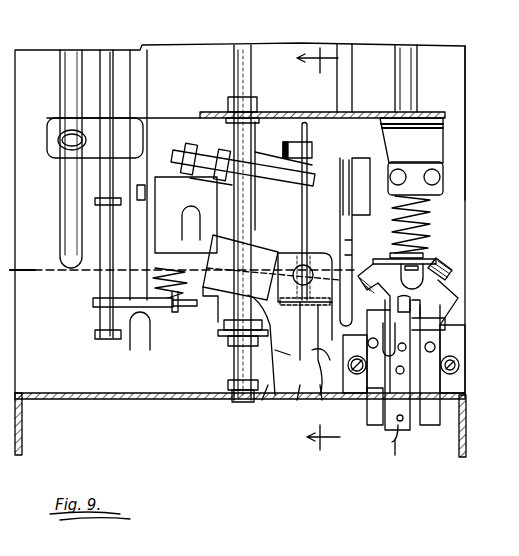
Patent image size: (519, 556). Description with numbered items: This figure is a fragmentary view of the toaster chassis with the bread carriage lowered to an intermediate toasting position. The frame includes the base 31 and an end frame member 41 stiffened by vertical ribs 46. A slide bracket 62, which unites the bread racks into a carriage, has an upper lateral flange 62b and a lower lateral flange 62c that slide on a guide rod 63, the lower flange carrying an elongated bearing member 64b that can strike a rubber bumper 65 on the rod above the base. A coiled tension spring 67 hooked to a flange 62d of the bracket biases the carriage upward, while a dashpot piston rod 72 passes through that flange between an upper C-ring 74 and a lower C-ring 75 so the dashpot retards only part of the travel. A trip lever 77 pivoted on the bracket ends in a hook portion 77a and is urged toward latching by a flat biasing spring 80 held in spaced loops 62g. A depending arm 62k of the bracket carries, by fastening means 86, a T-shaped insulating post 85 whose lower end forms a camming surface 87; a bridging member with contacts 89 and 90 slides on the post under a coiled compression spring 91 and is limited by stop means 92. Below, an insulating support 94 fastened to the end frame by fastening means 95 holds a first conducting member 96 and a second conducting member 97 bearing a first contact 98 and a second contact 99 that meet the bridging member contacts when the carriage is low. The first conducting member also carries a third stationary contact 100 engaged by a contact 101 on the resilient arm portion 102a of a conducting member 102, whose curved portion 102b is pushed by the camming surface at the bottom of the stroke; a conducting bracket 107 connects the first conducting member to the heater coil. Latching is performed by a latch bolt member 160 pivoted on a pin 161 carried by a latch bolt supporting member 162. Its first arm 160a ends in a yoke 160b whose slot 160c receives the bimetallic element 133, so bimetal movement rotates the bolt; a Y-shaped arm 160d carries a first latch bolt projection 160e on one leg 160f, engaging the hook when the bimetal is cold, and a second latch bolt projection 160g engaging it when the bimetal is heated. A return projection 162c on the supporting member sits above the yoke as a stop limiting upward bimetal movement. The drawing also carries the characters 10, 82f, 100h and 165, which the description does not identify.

The section line 10 is at (303, 42).
The base 31 is at (22, 418).
The end frame member 41 is at (447, 67).
The vertical ribs 46 is at (67, 70).
The slide bracket 62 is at (157, 118).
The upper lateral flange 62b is at (289, 111).
The lower lateral flange 62c is at (225, 325).
The flange 62d is at (122, 342).
The spaced loops 62g is at (225, 150).
The depending arm 62k is at (430, 145).
The guide rod 63 is at (238, 60).
The elongated bearing member 64b is at (230, 340).
The rubber bumper 65 is at (215, 385).
The coiled tension spring 67 is at (150, 285).
The piston rod 72 is at (110, 55).
The C-ring 74 is at (98, 201).
The C-ring 75 is at (95, 333).
The trip lever 77 is at (309, 131).
The hook portion 77a is at (300, 395).
The biasing spring 80 is at (262, 170).
The block 82f is at (293, 142).
The insulating post 85 is at (448, 168).
The fastening means 86 is at (425, 172).
The camming surface 87 is at (420, 275).
The contact 89 is at (358, 276).
The contact 90 is at (442, 268).
The coiled compression spring 91 is at (420, 220).
The stop means 92 is at (412, 268).
The insulating support 94 is at (455, 350).
The fastening means 95 is at (459, 365).
The first conducting member 96 is at (368, 378).
The second conducting member 97 is at (433, 420).
The first contact 98 is at (380, 351).
The second contact 99 is at (445, 282).
The third stationary contact 100 is at (402, 312).
The finger 100h is at (322, 352).
The contact 101 is at (440, 330).
The conducting member 102 is at (400, 412).
The resilient arm portion 102a is at (400, 440).
The curved portion 102b is at (430, 318).
The conducting bracket 107 is at (375, 425).
The bimetallic element 133 is at (35, 270).
The latch bolt member 160 is at (266, 240).
The first arm 160a is at (246, 240).
The yoke 160b is at (247, 258).
The slot 160c is at (273, 280).
The Y-shaped arm 160d is at (240, 350).
The first latch bolt projection 160e is at (270, 400).
The leg 160f is at (268, 364).
The second latch bolt projection 160g is at (323, 401).
The pin 161 is at (306, 262).
The latch bolt supporting member 162 is at (170, 170).
The return projection 162c is at (205, 225).
The wire 165 is at (398, 460).